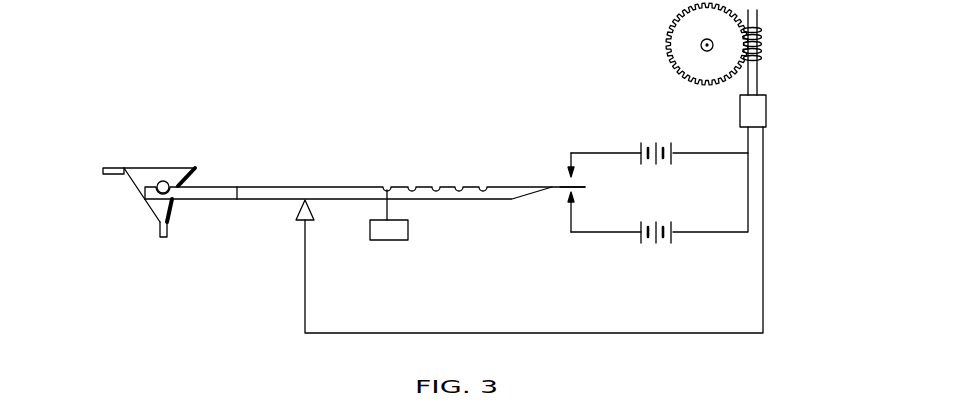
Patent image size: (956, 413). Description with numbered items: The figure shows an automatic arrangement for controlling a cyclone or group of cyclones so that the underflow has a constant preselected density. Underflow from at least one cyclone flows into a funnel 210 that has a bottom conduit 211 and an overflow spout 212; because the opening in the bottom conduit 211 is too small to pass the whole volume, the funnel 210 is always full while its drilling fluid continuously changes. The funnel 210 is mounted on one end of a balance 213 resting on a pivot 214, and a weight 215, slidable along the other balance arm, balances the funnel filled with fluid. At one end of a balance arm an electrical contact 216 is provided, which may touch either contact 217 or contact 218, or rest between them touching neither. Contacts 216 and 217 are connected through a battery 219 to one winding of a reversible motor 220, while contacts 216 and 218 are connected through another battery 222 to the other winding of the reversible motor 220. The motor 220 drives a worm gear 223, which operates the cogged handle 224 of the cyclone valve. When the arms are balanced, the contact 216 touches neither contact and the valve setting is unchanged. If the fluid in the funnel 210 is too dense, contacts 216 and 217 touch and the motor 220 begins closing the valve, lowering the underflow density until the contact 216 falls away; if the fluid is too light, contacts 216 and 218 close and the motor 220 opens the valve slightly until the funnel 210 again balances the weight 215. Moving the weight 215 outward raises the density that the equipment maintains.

The funnel 210 is at (171, 167).
The bottom conduit 211 is at (158, 225).
The overflow spout 212 is at (121, 167).
The balance 213 is at (263, 187).
The pivot 214 is at (296, 216).
The weight 215 is at (408, 232).
The electrical contact 216 is at (585, 188).
The contact 217 is at (568, 170).
The contact 218 is at (568, 200).
The battery 219 is at (657, 141).
The reversible motor 220 is at (768, 108).
The battery 222 is at (656, 244).
The worm gear 223 is at (763, 45).
The cogged handle 224 is at (668, 42).